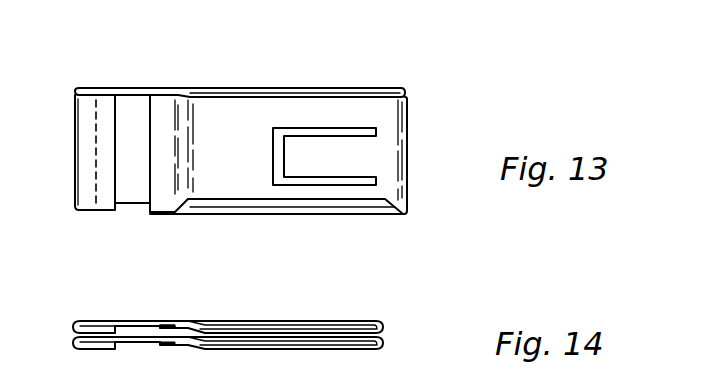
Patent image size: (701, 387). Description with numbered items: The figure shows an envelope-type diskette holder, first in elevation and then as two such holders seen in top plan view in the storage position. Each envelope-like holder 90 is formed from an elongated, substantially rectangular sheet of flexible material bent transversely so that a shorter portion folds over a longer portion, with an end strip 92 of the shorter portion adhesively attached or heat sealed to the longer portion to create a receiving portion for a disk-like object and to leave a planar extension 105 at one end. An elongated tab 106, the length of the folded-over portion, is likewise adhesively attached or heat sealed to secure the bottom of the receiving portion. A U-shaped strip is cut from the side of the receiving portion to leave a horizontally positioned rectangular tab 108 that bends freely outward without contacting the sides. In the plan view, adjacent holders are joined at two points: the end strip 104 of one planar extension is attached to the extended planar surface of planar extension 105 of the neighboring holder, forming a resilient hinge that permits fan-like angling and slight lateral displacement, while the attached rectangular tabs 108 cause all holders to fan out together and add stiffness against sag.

In FIG. 13, the envelope-like holder 90 is at (406, 96).
In FIG. 14, the envelope-like holder 90 is at (383, 328).
In FIG. 13, the end strip 92 is at (160, 198).
In FIG. 14, the end strip 92 is at (174, 325).
In FIG. 13, the end strip 104 is at (104, 200).
In FIG. 14, the end strip 104 is at (102, 330).
In FIG. 13, the planar extension 105 is at (130, 112).
In FIG. 14, the planar extension 105 is at (128, 320).
In FIG. 13, the elongated tab 106 is at (217, 205).
In FIG. 13, the rectangular tab 108 is at (293, 157).